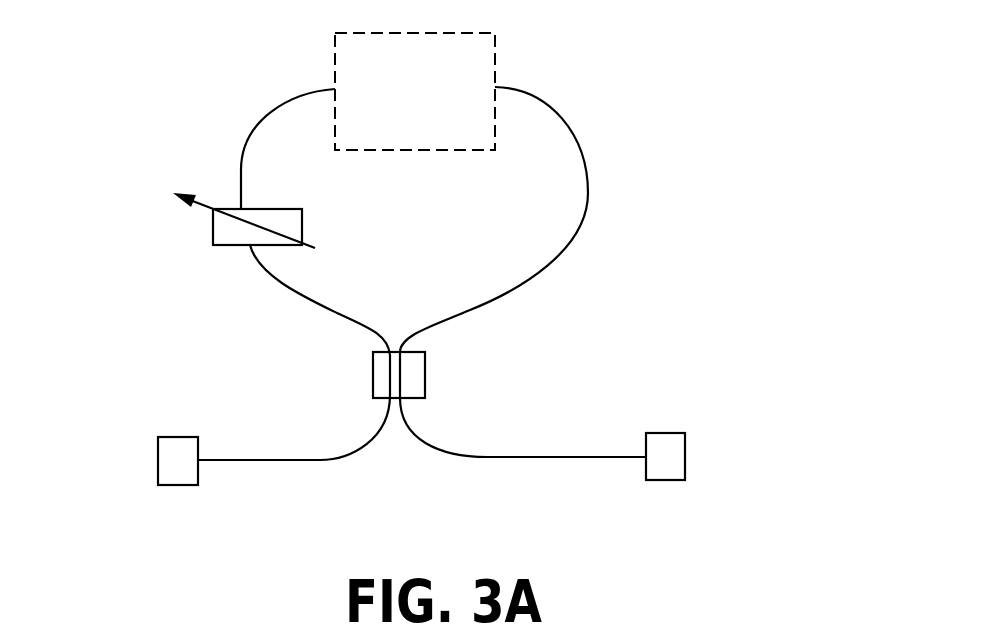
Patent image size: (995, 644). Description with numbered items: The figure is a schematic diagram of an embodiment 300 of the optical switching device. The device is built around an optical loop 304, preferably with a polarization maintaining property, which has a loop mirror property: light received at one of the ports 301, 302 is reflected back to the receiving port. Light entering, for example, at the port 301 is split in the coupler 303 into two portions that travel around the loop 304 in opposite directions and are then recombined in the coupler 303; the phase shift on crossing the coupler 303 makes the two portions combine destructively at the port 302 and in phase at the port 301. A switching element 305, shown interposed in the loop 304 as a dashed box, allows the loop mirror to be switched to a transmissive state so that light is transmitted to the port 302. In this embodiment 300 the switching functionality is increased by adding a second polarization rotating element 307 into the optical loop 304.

The optical switching device embodiment 300 is at (724, 89).
The port 301 is at (158, 470).
The port 302 is at (685, 465).
The coupler 303 is at (425, 377).
The optical loop 304 is at (588, 225).
The switching element 305 is at (495, 58).
The second polarization rotating element 307 is at (212, 235).